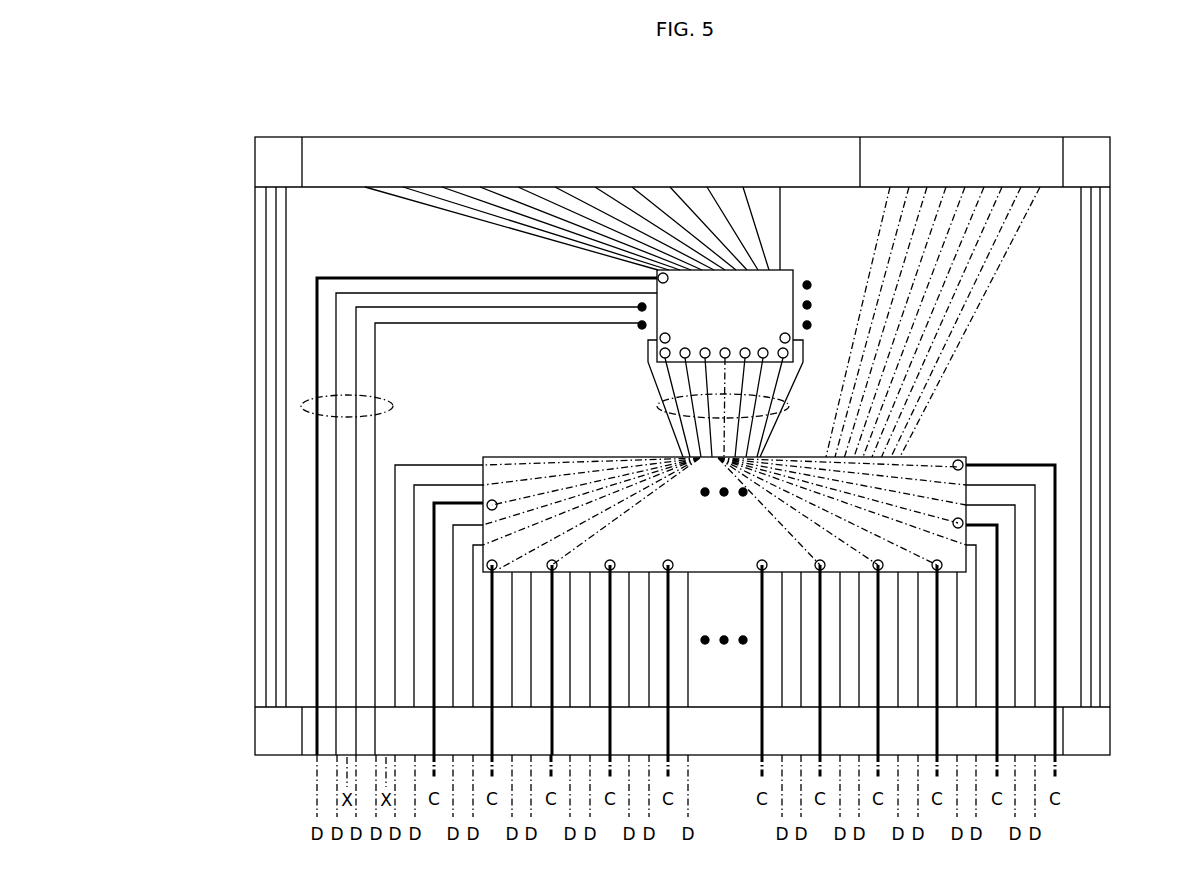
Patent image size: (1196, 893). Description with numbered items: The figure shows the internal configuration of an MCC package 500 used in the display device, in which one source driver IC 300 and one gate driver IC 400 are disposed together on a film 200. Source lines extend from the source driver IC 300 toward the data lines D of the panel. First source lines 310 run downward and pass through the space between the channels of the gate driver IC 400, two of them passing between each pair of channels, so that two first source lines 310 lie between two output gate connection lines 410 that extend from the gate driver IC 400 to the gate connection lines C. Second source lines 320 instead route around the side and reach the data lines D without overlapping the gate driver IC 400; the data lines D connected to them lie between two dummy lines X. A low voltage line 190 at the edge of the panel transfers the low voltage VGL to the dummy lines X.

The MCC package 500 is at (214, 82).
The low voltage line 190 is at (286, 247).
The film 200 is at (1033, 347).
The source driver IC 300 is at (782, 286).
The first source lines 310 is at (787, 403).
The second source lines 320 is at (302, 405).
The gate driver IC 400 is at (960, 553).
The output gate connection lines 410 is at (668, 727).